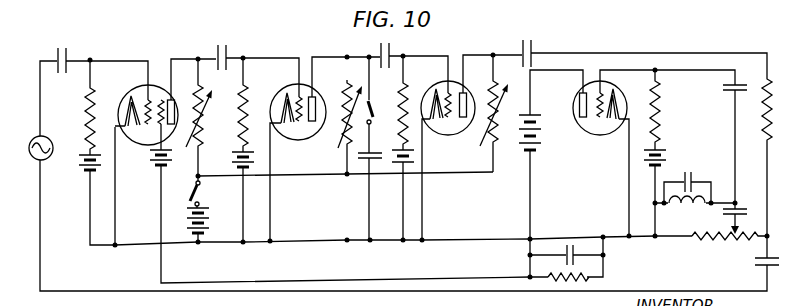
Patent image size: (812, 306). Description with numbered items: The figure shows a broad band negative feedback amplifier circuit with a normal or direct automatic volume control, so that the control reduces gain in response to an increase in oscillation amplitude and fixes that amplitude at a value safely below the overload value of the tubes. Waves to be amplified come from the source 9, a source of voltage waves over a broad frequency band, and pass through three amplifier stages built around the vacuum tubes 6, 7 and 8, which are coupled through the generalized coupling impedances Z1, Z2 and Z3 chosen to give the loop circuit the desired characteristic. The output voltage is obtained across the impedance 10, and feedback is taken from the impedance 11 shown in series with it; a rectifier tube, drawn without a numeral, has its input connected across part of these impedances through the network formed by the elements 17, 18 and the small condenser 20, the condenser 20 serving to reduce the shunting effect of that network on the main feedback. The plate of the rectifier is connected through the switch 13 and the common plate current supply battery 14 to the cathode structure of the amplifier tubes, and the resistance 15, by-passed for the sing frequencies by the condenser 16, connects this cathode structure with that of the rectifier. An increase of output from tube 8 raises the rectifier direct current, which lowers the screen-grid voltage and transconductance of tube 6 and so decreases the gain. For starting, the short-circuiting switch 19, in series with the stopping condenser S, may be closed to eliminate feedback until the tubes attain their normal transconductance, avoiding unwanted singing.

The vacuum tube 6 is at (138, 88).
The vacuum tube 7 is at (290, 92).
The vacuum tube 8 is at (445, 88).
The source 9 is at (48, 158).
The impedance 10 is at (776, 95).
The impedance 11 is at (738, 242).
The switch 13 is at (204, 192).
The common plate current supply battery 14 is at (212, 218).
The resistance 15 is at (590, 285).
The condenser 16 is at (577, 242).
The network element 17 is at (682, 210).
The network element 18 is at (690, 172).
The switch 19 is at (375, 103).
The small condenser 20 is at (750, 212).
The stopping condenser S is at (382, 157).
The coupling impedance Z1 is at (206, 115).
The coupling impedance Z2 is at (340, 120).
The coupling impedance Z3 is at (485, 119).